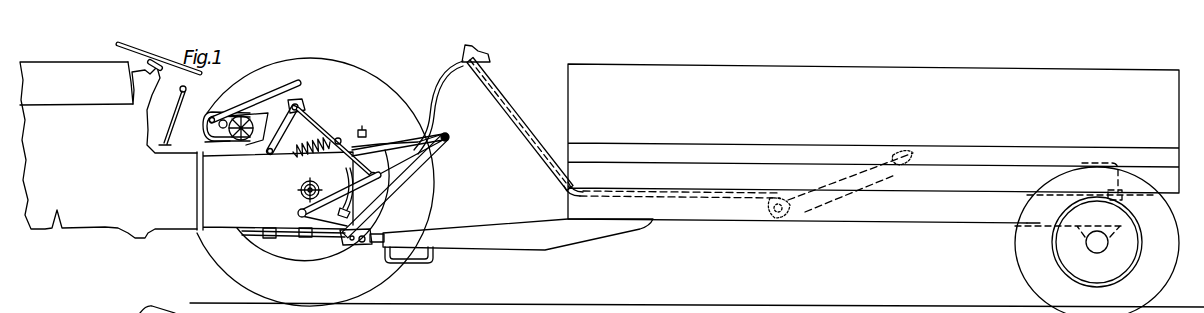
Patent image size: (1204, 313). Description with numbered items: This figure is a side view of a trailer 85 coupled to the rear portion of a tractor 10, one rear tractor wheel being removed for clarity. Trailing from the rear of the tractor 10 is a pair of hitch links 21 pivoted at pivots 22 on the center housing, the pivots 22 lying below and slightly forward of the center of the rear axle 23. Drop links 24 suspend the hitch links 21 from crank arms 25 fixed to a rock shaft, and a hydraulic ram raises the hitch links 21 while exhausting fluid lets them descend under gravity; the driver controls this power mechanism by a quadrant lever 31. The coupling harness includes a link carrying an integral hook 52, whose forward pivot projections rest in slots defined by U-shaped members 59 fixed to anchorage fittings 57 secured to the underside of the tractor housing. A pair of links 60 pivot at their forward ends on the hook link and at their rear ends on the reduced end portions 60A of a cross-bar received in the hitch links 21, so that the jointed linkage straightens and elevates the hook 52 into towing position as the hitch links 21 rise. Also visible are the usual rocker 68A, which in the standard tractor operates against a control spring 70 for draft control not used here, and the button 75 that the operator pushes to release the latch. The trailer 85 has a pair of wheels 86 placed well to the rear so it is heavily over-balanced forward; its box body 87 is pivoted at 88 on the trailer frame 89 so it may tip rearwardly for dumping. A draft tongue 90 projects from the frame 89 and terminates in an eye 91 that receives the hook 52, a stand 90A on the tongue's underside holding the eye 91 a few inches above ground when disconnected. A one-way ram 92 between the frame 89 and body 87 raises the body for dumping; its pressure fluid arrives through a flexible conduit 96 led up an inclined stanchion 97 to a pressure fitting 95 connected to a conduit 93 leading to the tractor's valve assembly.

The tractor 10 is at (117, 236).
The hitch links 21 is at (396, 165).
The pivots 22 is at (297, 207).
The rear axle 23 is at (301, 187).
The drop links 24 is at (326, 120).
The crank arms 25 is at (296, 97).
The quadrant lever 31 is at (218, 126).
The hook 52 is at (347, 244).
The anchorage fittings 57 is at (312, 239).
The U-shaped members 59 is at (270, 238).
The links 60 is at (416, 168).
The reduced end portions 60A is at (448, 140).
The rocker 68A is at (338, 138).
The control spring 70 is at (311, 150).
The button 75 is at (364, 130).
The trailer 85 is at (960, 236).
The wheels 86 is at (1017, 261).
The box body 87 is at (736, 81).
The pivot 88 is at (1122, 227).
The trailer frame 89 is at (875, 218).
The draft tongue 90 is at (537, 247).
The stand 90A is at (418, 266).
The eye 91 is at (366, 245).
The ram 92 is at (807, 205).
The conduit 93 is at (297, 214).
The pressure fitting 95 is at (339, 194).
The flexible conduit 96 is at (443, 88).
The stanchion 97 is at (531, 133).